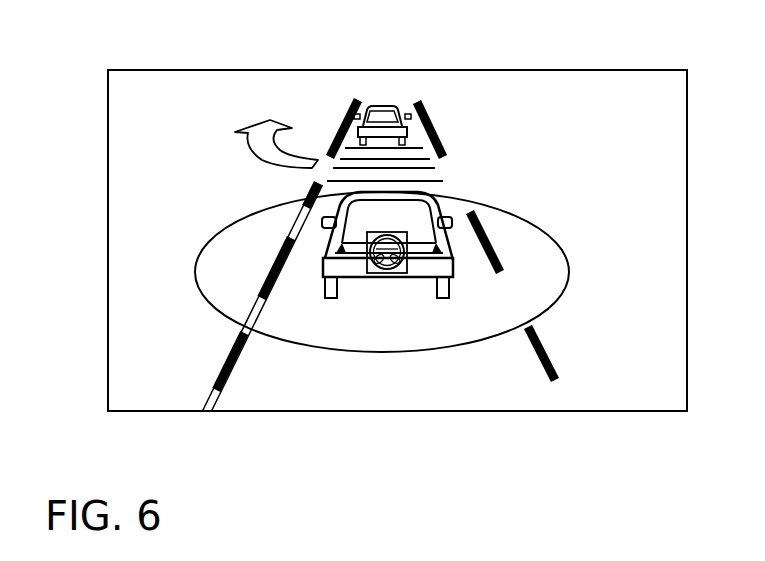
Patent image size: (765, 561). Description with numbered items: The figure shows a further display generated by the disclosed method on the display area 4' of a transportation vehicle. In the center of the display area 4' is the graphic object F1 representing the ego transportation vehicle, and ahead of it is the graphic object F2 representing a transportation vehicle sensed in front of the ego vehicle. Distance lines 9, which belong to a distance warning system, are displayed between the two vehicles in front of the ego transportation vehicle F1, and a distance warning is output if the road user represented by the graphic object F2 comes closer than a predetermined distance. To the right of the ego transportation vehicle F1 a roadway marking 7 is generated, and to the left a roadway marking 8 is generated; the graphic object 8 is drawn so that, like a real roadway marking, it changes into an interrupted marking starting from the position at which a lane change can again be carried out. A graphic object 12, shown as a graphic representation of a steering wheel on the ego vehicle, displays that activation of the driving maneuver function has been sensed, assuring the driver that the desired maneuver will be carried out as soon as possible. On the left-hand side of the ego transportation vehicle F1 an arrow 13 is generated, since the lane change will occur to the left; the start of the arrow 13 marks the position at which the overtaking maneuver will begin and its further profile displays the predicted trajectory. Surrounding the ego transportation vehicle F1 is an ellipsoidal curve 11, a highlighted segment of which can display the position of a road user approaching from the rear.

The display area 4' is at (363, 240).
The graphic object (roadway marking) 8 is at (340, 120).
The graphic object (arrow) 13 is at (313, 172).
The distance lines 9 is at (421, 176).
The graphic object for sensed transportation vehicle F2 is at (407, 130).
The ellipsoidal curve 11 is at (510, 222).
The graphic object (roadway marking) 7 is at (555, 363).
The graphic object for ego transportation vehicle F1 is at (461, 329).
The graphic object (steering wheel) 12 is at (368, 271).